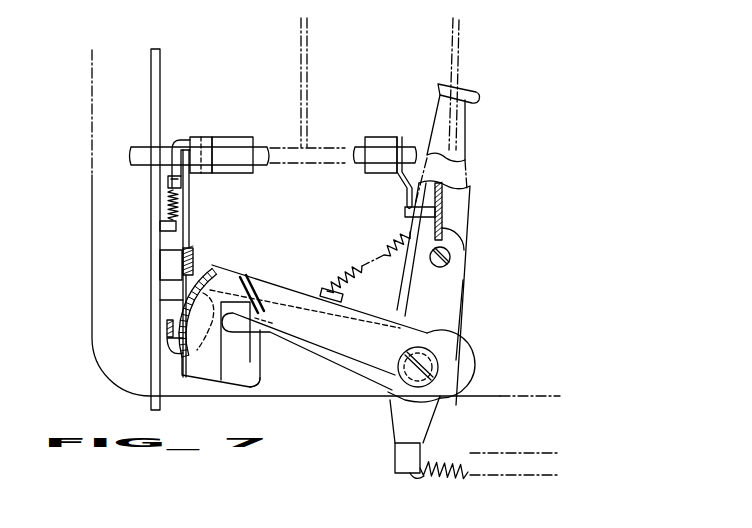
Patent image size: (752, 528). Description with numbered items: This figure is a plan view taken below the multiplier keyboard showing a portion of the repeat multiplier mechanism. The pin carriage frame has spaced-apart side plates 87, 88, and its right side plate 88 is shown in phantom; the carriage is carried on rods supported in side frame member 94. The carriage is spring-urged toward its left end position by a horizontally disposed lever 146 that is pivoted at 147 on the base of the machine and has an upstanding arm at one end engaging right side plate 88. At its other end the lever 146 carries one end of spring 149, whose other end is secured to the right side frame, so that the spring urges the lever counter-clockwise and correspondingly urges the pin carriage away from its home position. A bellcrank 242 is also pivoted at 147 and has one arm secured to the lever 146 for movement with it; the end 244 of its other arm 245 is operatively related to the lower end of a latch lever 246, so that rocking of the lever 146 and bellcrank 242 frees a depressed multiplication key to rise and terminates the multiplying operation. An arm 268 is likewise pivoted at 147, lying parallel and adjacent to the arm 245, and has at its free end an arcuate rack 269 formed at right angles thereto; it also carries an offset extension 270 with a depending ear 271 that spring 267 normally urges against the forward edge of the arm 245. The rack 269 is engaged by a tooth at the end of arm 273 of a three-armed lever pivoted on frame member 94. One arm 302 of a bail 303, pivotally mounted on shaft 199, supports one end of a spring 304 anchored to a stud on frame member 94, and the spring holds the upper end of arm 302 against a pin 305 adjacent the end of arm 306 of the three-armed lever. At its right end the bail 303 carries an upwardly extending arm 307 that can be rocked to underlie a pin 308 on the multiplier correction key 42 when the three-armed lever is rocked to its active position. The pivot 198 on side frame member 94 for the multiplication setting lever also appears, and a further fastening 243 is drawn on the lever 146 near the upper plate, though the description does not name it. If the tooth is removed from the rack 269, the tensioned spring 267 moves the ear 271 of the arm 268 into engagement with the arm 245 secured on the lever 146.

The side frame member 94 is at (151, 79).
The side plate 87 is at (301, 74).
The right side plate 88 is at (456, 54).
The arm of bail 302 is at (176, 140).
The bail 303 is at (225, 141).
The pin 305 is at (168, 181).
The spring 304 is at (168, 212).
The arm of 3-armed lever 306 is at (186, 218).
The arm of 3-armed lever 273 is at (183, 302).
The latch lever 246 is at (167, 327).
The end of arm 244 is at (176, 349).
The arcuate rack 269 is at (208, 263).
The arm 268 is at (273, 298).
The depending ear 271 is at (262, 323).
The offset extension 270 is at (258, 382).
The arm of bellcrank 245 is at (320, 348).
The spring 267 is at (358, 268).
The shaft 199 is at (375, 157).
The upwardly extending arm 307 is at (397, 189).
The pin 308 is at (405, 212).
The multiplier correction key 42 is at (438, 225).
The pivot 198 is at (470, 91).
The lever 146 is at (466, 222).
The pivot screw 243 is at (451, 258).
The bellcrank 242 is at (445, 318).
The pivot 147 is at (438, 365).
The spring 149 is at (447, 460).